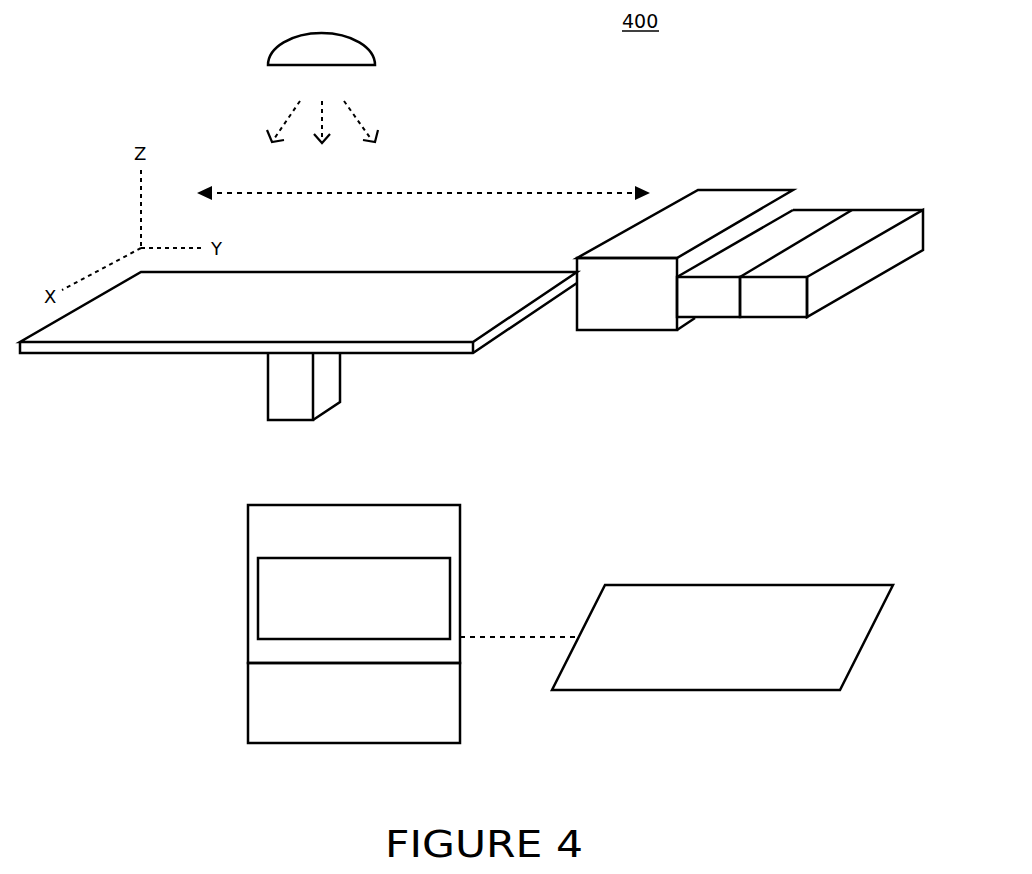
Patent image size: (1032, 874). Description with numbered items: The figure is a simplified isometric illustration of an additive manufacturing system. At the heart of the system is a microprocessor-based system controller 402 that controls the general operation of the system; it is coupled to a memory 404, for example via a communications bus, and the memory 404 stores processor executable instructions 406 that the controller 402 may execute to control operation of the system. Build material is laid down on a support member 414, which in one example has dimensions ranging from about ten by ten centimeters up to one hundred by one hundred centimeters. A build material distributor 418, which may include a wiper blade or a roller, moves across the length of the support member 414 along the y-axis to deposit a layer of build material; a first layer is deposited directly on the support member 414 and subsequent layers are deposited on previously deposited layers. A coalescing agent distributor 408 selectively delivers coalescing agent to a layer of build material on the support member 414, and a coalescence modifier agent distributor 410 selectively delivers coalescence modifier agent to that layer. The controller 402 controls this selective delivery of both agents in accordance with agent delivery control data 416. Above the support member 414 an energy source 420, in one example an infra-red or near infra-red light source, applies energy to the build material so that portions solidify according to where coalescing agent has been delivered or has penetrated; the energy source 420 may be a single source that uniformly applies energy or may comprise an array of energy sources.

The system controller 402 is at (248, 717).
The memory 404 is at (260, 533).
The processor executable instructions 406 is at (258, 612).
The coalescing agent distributor 408 is at (868, 210).
The coalescence modifier agent distributor 410 is at (800, 210).
The support member 414 is at (427, 271).
The agent delivery control data 416 is at (863, 648).
The build material distributor 418 is at (703, 189).
The energy source 420 is at (345, 65).